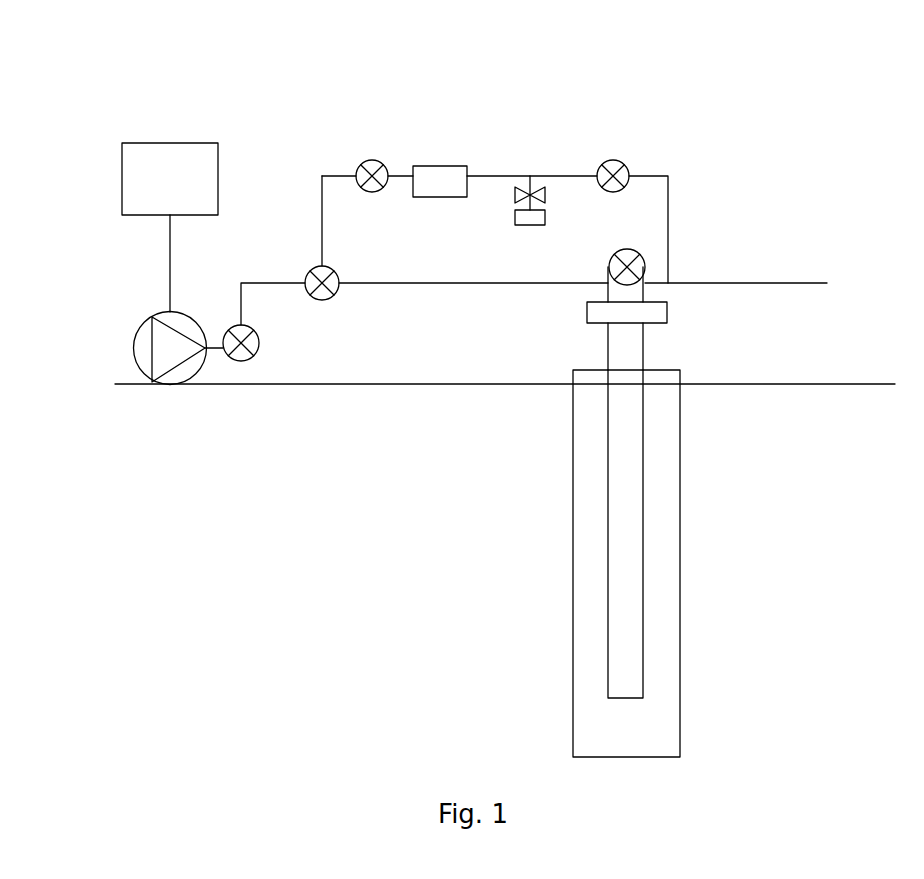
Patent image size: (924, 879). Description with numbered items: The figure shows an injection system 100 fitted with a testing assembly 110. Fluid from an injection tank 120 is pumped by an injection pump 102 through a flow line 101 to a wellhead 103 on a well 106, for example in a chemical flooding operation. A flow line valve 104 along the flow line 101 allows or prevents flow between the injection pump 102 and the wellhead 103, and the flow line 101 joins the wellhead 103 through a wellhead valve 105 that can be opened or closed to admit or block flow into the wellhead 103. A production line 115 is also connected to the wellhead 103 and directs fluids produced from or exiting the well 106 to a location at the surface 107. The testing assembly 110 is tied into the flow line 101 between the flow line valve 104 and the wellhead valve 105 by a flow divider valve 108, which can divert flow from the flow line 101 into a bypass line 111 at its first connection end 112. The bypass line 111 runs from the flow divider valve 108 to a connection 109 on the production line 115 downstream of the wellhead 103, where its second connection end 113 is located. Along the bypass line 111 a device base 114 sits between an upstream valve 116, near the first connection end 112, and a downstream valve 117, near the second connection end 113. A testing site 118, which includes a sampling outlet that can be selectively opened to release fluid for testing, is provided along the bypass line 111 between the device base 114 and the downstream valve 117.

The system 100 is at (767, 45).
The flow line 101 is at (278, 282).
The injection pump 102 is at (153, 320).
The wellhead 103 is at (587, 310).
The flow line valve 104 is at (237, 327).
The wellhead valve 105 is at (620, 257).
The well 106 is at (688, 470).
The surface 107 is at (760, 383).
The flow divider valve 108 is at (320, 268).
The connection 109 is at (670, 288).
The testing assembly 110 is at (318, 140).
The bypass line 111 is at (502, 175).
The first connection end 112 is at (334, 264).
The second connection end 113 is at (678, 258).
The device base 114 is at (440, 166).
The production line 115 is at (787, 283).
The upstream valve 116 is at (370, 163).
The downstream valve 117 is at (605, 165).
The testing site 118 is at (508, 200).
The injection tank 120 is at (150, 192).